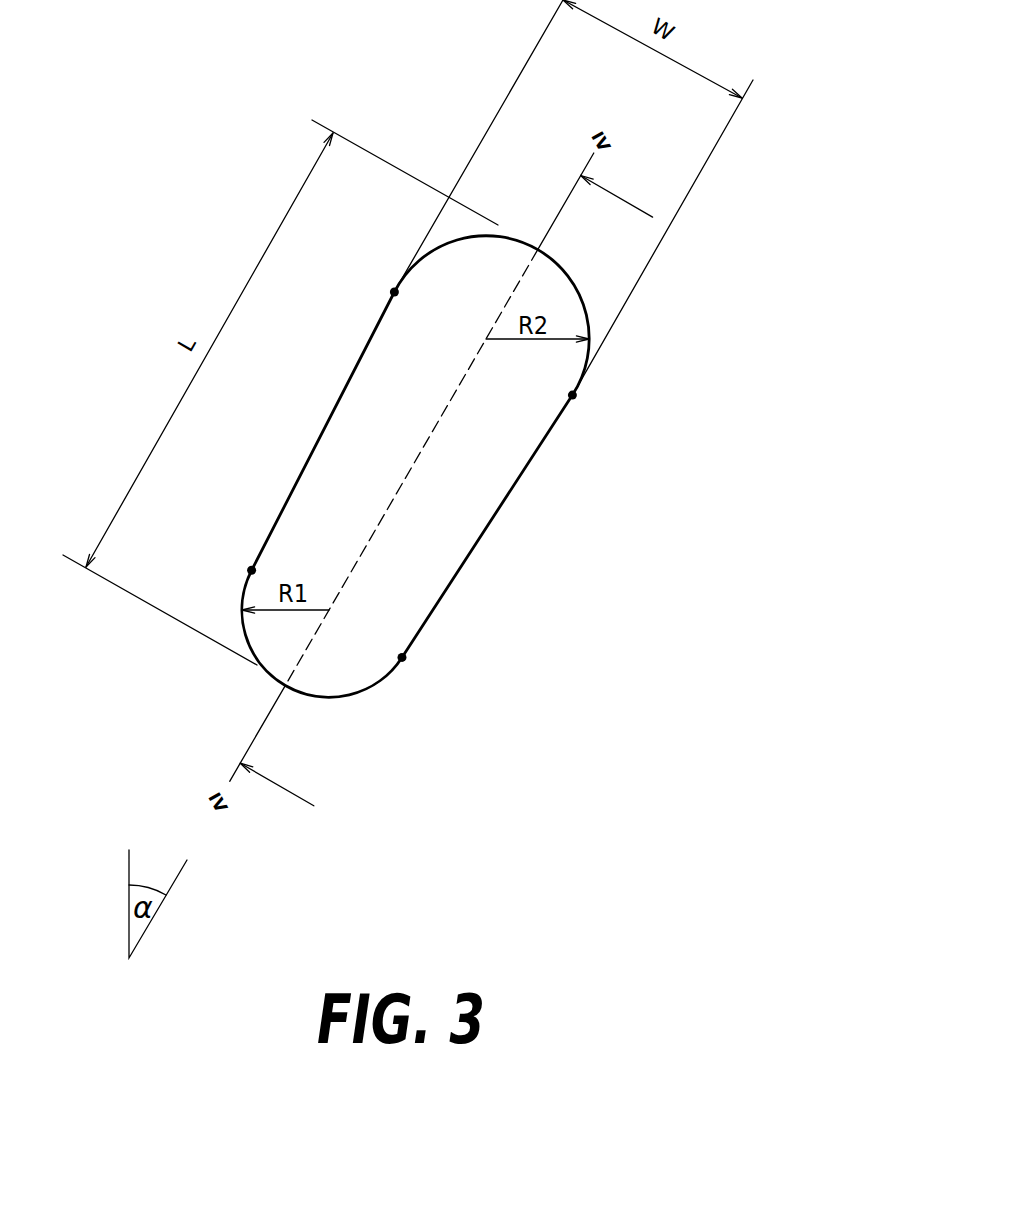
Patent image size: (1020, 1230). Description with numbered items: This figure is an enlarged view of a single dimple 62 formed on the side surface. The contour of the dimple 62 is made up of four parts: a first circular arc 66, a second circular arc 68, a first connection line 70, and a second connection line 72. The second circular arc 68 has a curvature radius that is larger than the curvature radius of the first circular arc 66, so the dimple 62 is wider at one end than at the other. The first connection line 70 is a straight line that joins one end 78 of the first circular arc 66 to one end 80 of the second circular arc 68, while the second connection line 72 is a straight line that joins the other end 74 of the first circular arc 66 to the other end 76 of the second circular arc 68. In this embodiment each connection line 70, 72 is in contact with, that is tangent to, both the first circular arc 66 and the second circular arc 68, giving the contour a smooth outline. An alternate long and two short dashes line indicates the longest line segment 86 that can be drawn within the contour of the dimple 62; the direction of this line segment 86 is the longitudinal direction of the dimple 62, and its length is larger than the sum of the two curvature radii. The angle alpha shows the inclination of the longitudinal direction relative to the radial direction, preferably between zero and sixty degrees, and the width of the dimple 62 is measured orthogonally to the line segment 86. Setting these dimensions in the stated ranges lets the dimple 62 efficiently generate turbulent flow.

The dimple 62 is at (418, 469).
The first circular arc 66 is at (338, 698).
The second circular arc 68 is at (521, 241).
The first connection line 70 is at (497, 511).
The second connection line 72 is at (320, 437).
The other end of the first circular arc 74 is at (249, 571).
The other end of the second circular arc 76 is at (392, 293).
The one end of the first circular arc 78 is at (403, 659).
The one end of the second circular arc 80 is at (574, 397).
The longest line segment 86 is at (452, 403).